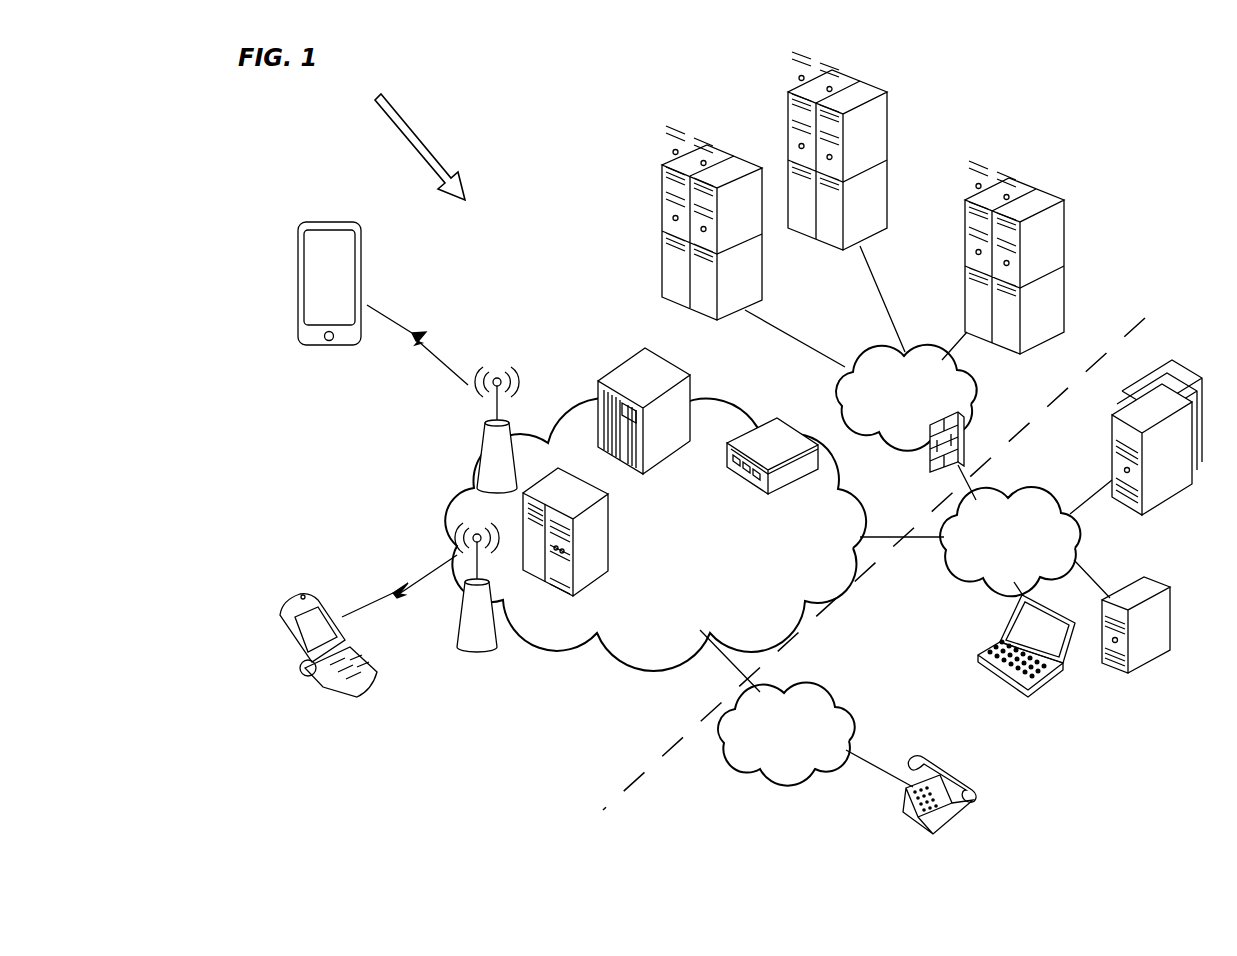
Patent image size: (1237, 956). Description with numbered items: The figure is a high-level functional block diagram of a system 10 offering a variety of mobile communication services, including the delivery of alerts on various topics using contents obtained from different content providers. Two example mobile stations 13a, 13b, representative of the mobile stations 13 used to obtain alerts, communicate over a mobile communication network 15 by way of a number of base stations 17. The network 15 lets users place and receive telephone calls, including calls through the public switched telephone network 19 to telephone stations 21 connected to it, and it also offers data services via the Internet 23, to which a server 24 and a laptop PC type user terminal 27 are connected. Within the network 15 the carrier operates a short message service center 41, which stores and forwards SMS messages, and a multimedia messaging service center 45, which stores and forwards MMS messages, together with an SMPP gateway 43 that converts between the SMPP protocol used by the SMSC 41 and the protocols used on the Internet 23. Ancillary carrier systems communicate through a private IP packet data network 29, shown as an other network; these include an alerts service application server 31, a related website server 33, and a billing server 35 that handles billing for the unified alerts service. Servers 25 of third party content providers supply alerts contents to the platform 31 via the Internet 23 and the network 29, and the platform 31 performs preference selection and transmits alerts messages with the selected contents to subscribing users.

The system 10 is at (410, 142).
The mobile stations 13 is at (254, 552).
The mobile station 13a is at (275, 621).
The mobile station 13b is at (298, 263).
The mobile communication network 15 is at (556, 424).
The base stations 17 is at (484, 447).
The public switched telephone network (PSTN) 19 is at (852, 720).
The telephone stations 21 is at (905, 818).
The Internet 23 is at (962, 578).
The server 24 is at (1170, 631).
The servers of third party content providers 25 is at (1112, 395).
The laptop PC type user terminal 27 is at (1000, 677).
The private IP type packet data network 29 is at (975, 413).
The alerts service application server 31 is at (888, 145).
The website server 33 is at (1064, 290).
The billing system or server 35 is at (662, 213).
The short message service center (SMSC) 41 is at (622, 364).
The SMPP gateway 43 is at (745, 433).
The multimedia messaging service center (MMSC) 45 is at (608, 580).